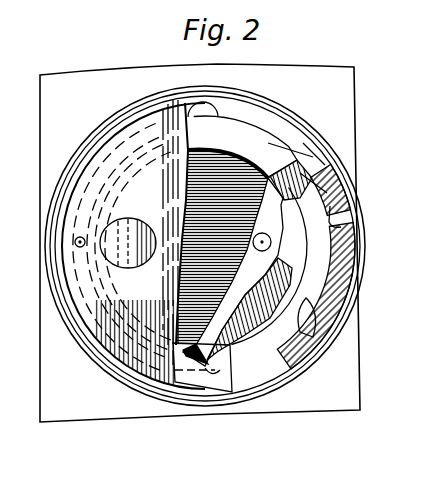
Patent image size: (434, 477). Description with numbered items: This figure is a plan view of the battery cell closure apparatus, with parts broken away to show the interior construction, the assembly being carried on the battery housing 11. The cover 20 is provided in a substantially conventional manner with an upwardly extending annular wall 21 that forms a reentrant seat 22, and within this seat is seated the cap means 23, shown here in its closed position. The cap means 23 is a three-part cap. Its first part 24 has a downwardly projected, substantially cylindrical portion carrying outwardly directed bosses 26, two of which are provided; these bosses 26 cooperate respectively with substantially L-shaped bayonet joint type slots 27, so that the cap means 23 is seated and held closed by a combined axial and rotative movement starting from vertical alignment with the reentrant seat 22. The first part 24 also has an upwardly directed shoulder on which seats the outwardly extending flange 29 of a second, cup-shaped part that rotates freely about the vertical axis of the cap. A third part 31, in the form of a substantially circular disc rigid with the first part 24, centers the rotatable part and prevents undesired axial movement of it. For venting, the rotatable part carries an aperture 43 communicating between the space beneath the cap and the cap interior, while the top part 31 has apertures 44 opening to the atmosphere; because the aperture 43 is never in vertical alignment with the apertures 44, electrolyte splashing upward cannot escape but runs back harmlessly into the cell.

The housing 11 is at (10, 378).
The cover 20 is at (318, 412).
The annular wall 21 is at (327, 185).
The reentrant seat 22 is at (305, 345).
The cap means 23 is at (148, 174).
The first part 24 is at (305, 148).
The bosses 26 is at (348, 289).
The bayonet joint slots 27 is at (345, 226).
The flange 29 is at (252, 139).
The third part 31 is at (165, 308).
The aperture 43 is at (259, 250).
The apertures 44 is at (76, 246).